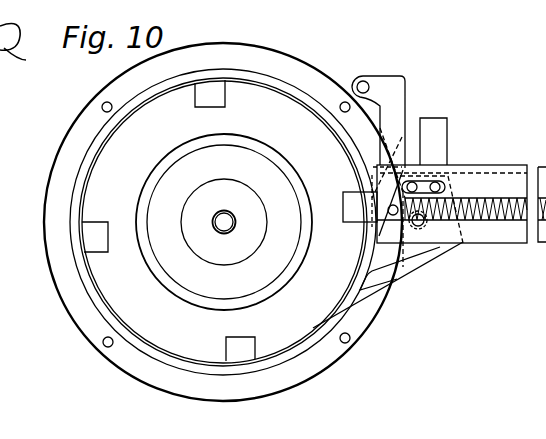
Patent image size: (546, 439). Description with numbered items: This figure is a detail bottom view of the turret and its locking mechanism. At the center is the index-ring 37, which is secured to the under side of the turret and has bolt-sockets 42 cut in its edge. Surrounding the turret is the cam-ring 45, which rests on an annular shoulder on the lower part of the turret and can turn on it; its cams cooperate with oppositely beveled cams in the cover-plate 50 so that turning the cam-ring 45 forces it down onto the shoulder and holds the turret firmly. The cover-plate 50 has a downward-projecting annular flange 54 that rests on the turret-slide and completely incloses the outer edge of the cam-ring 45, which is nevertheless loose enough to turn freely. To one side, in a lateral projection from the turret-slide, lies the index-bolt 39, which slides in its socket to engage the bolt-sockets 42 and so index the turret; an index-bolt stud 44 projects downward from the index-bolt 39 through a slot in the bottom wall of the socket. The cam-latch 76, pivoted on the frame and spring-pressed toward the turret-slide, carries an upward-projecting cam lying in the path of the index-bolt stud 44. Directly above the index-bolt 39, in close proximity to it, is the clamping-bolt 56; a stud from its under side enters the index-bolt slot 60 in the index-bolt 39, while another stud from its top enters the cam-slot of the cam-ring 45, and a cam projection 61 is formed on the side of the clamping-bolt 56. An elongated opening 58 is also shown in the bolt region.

The index-ring 37 is at (215, 222).
The index-bolt 39 is at (468, 179).
The bolt-sockets 42 is at (85, 233).
The index-bolt stud 44 is at (390, 212).
The cam-ring 45 is at (340, 317).
The cover-plate 50 is at (363, 337).
The annular flange 54 is at (343, 353).
The clamping-bolt 56 is at (497, 239).
The slot 58 is at (410, 183).
The index-bolt slot 60 is at (433, 192).
The cam projection 61 is at (446, 126).
The cam-latch 76 is at (400, 97).